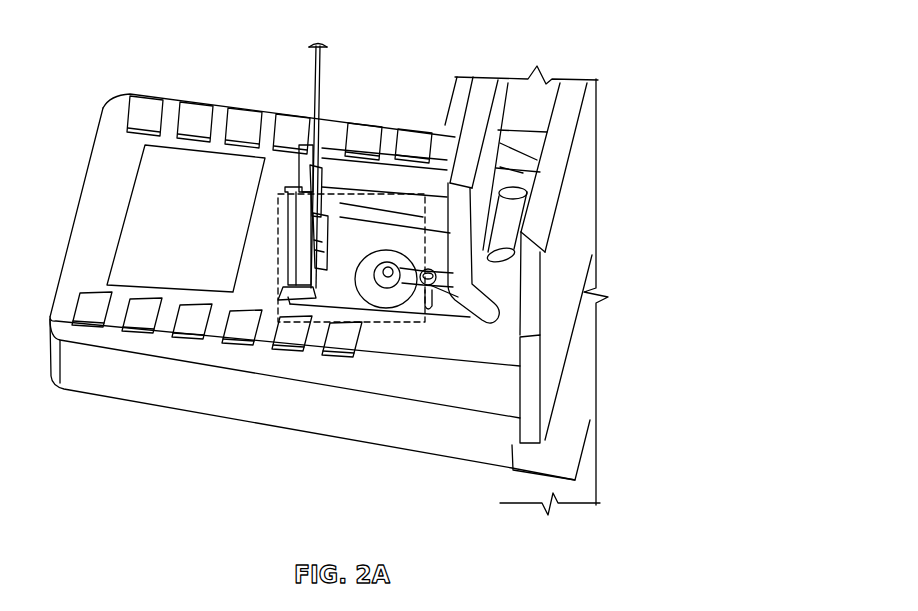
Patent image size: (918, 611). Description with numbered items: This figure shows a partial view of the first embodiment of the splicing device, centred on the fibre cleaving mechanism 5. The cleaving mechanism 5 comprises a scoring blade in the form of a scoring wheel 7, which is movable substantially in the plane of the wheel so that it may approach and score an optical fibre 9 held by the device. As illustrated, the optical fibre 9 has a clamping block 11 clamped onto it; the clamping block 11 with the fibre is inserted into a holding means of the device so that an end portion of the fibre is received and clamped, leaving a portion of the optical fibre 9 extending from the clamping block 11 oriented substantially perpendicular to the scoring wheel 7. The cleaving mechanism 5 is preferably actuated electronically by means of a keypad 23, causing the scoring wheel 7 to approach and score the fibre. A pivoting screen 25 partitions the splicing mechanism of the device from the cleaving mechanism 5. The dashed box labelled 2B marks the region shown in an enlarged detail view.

The keypad 23 is at (147, 230).
The detail view region 2B is at (277, 233).
The fibre cleaving mechanism 5 is at (342, 290).
The clamping block 11 is at (305, 158).
The optical fibre 9 is at (320, 86).
The scoring wheel 7 is at (380, 293).
The pivoting screen 25 is at (583, 215).